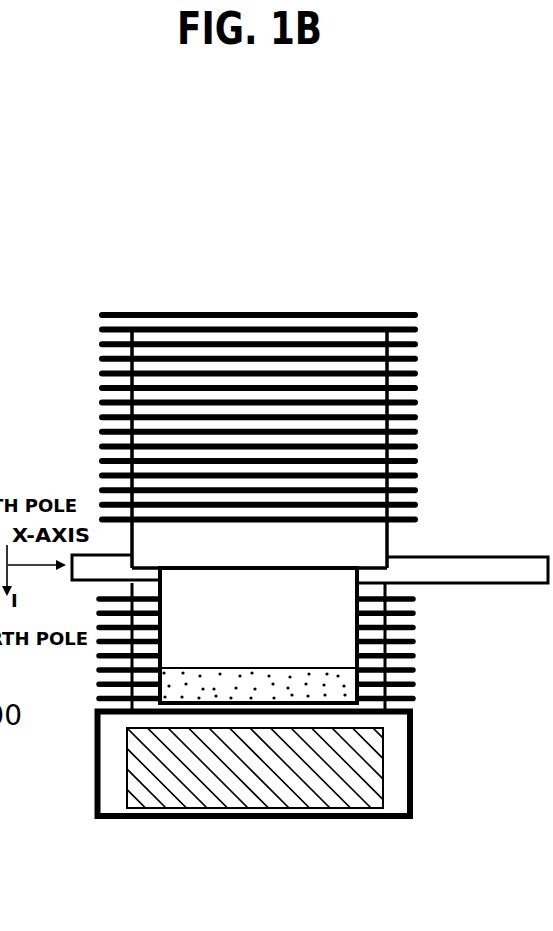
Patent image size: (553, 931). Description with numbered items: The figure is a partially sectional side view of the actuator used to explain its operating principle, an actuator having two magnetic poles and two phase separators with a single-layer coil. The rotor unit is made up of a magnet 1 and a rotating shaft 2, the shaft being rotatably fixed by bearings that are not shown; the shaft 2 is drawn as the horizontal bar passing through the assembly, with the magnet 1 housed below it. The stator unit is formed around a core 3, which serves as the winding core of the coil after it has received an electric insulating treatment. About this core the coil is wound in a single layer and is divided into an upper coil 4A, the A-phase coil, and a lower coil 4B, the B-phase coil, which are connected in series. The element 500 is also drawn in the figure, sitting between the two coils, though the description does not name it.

The magnet 1 is at (193, 683).
The rotating shaft 2 is at (503, 573).
The core 3 is at (228, 778).
The upper coil (A-phase coil) 4A is at (438, 310).
The lower coil (B-phase coil) 4B is at (435, 602).
The magnetic core 500 is at (200, 593).